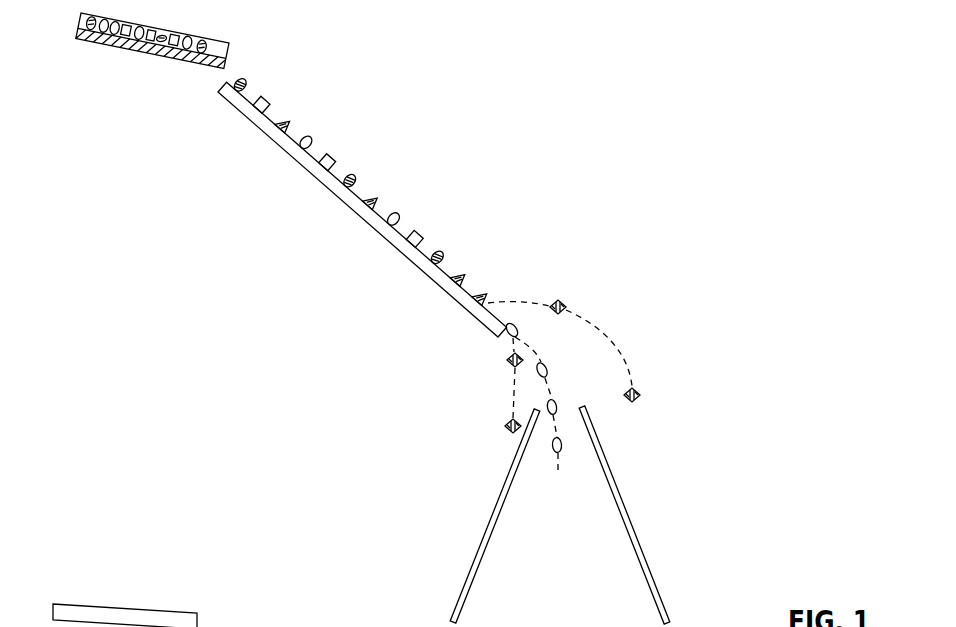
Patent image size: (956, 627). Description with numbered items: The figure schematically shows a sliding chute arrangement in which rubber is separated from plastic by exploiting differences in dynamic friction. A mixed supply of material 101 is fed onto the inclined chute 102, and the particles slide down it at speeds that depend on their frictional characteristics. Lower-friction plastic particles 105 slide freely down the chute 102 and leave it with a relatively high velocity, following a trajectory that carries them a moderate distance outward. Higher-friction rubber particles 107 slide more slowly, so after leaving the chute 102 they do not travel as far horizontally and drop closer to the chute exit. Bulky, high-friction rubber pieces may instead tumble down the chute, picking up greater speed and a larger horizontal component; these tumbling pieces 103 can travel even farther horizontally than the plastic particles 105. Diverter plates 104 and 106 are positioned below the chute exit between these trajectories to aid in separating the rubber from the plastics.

The supply container of mixed items 101 is at (146, 58).
The chute 102 is at (325, 183).
The tumbling pieces 103 is at (656, 406).
The diverter plate 104 is at (637, 527).
The plastic particles 105 is at (546, 470).
The diverter plate 106 is at (484, 533).
The rubber particles 107 is at (490, 427).